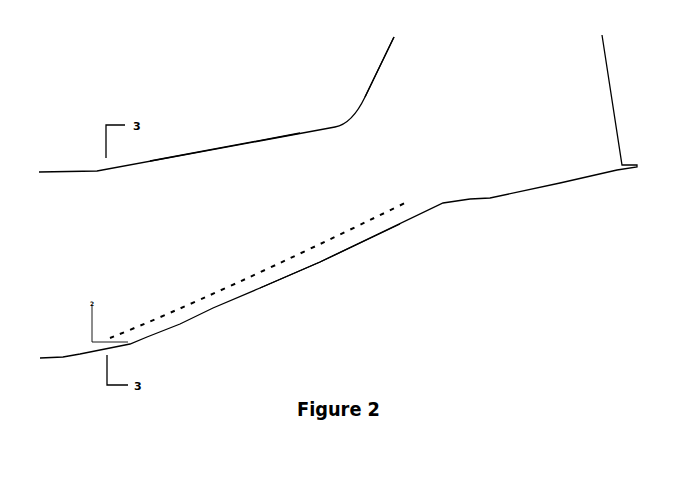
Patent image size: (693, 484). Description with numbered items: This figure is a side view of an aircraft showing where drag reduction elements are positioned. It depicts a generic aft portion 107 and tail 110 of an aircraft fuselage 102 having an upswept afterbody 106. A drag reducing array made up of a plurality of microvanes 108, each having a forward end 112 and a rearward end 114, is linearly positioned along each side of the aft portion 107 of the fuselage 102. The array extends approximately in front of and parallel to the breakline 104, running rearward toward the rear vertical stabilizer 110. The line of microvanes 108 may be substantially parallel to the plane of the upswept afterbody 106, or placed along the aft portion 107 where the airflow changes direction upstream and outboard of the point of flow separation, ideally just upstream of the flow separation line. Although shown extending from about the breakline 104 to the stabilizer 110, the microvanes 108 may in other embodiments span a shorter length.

The aircraft fuselage 102 is at (48, 200).
The breakline 104 is at (83, 346).
The upswept afterbody 106 is at (317, 263).
The aft portion 107 is at (237, 173).
The microvanes 108 is at (173, 312).
The tail / rear vertical stabilizer 110 is at (396, 90).
The forward end 112 is at (357, 218).
The rearward end 114 is at (369, 226).